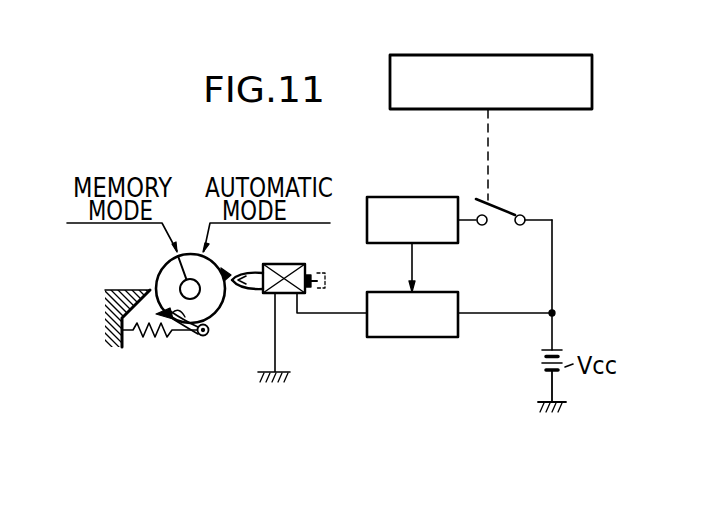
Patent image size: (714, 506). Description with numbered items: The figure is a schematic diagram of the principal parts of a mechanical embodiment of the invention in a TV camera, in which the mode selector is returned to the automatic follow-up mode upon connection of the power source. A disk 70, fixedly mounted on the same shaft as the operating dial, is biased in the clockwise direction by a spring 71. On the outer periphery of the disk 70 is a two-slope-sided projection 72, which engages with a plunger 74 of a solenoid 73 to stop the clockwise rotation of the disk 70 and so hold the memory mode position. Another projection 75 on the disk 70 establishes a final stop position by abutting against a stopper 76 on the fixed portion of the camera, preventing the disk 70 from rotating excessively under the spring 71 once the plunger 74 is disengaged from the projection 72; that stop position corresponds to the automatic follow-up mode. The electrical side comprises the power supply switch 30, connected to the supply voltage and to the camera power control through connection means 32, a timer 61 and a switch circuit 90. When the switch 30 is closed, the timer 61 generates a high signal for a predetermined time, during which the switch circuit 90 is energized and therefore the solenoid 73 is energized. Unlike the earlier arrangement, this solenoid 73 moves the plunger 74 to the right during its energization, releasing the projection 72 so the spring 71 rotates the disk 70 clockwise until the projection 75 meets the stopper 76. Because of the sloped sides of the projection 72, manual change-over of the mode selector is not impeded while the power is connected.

The power supply switch 30 is at (507, 203).
The connection means 32 is at (552, 54).
The timer 61 is at (430, 196).
The disk 70 is at (224, 323).
The spring 71 is at (152, 334).
The two-slope-sided projection 72 is at (229, 272).
The solenoid 73 is at (315, 241).
The plunger 74 is at (242, 291).
The projection 75 is at (200, 336).
The stopper 76 is at (148, 289).
The switch circuit 90 is at (420, 338).